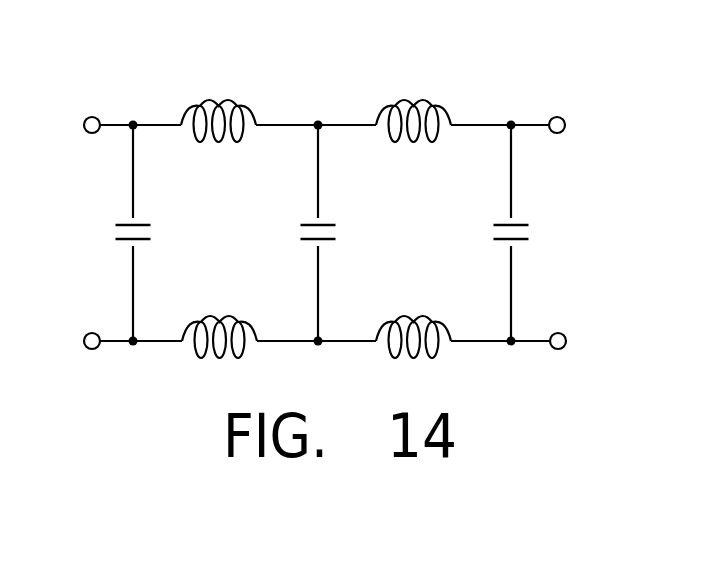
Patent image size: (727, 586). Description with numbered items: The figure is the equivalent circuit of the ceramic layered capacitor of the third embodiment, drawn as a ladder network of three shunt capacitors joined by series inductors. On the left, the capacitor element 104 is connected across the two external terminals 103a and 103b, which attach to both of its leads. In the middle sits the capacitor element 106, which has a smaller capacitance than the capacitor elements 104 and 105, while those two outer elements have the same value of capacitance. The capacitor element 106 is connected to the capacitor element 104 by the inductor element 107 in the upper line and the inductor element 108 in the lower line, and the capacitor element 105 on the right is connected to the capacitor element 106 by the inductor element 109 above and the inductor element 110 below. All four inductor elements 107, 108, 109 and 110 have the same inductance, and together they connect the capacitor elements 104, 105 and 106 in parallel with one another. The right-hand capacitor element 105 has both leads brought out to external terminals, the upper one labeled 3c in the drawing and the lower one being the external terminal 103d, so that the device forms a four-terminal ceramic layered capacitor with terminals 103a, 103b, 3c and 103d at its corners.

The external terminal 103a is at (86, 117).
The external terminal 103b is at (87, 334).
The output terminal 3c is at (562, 117).
The external terminal 103d is at (565, 334).
The capacitor element 104 is at (141, 234).
The capacitor element 105 is at (520, 234).
The capacitor element 106 is at (327, 234).
The inductor element 107 is at (243, 107).
The inductor element 108 is at (245, 323).
The inductor element 109 is at (441, 107).
The inductor element 110 is at (428, 323).